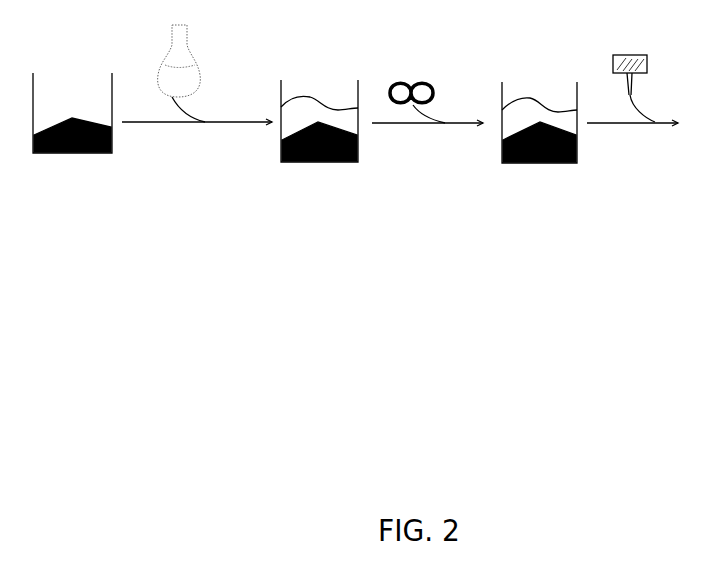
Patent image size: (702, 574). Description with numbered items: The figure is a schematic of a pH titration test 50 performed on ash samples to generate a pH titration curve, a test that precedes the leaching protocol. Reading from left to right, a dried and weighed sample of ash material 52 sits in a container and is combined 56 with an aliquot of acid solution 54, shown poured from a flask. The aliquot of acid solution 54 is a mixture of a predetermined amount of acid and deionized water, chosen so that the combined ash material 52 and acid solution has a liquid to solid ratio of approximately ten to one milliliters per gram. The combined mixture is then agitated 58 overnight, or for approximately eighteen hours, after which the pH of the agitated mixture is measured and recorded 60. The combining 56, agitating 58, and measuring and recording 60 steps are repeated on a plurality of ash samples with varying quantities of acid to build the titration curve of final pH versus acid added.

The pH titration test 50 is at (90, 255).
The ash material 52 is at (78, 117).
The aliquot of acid solution 54 is at (190, 78).
The combining step 56 is at (185, 122).
The agitating step 58 is at (435, 123).
The measuring and recording step 60 is at (628, 123).